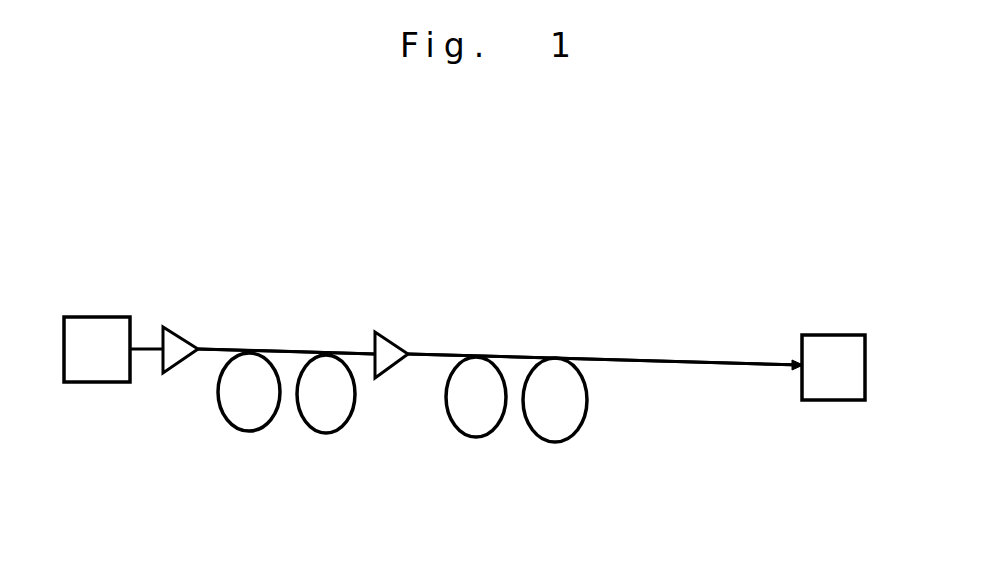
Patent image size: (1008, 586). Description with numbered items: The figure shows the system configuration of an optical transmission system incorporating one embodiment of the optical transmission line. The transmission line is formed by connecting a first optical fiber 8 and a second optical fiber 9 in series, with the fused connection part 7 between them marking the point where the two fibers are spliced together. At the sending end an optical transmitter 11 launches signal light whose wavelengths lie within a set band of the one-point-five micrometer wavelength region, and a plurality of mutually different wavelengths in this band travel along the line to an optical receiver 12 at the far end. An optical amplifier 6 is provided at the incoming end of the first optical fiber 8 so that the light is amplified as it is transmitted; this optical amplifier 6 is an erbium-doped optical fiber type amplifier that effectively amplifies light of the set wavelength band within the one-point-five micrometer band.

The optical amplifier 6 is at (183, 330).
The fused connection part 7 is at (291, 352).
The first optical fiber 8 is at (228, 349).
The second optical fiber 9 is at (310, 349).
The optical transmitter 11 is at (103, 316).
The optical receiver 12 is at (837, 335).